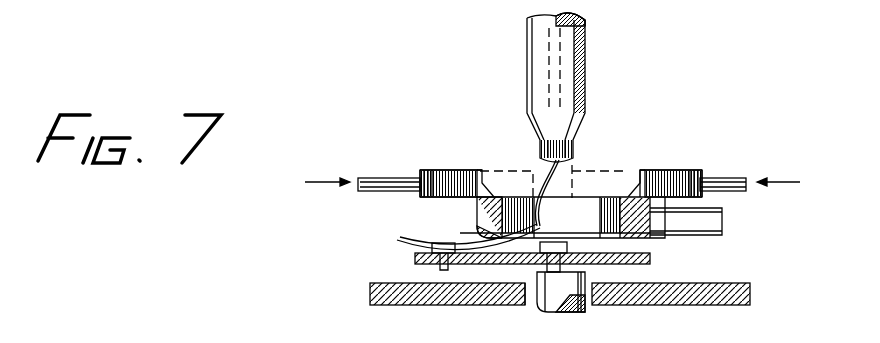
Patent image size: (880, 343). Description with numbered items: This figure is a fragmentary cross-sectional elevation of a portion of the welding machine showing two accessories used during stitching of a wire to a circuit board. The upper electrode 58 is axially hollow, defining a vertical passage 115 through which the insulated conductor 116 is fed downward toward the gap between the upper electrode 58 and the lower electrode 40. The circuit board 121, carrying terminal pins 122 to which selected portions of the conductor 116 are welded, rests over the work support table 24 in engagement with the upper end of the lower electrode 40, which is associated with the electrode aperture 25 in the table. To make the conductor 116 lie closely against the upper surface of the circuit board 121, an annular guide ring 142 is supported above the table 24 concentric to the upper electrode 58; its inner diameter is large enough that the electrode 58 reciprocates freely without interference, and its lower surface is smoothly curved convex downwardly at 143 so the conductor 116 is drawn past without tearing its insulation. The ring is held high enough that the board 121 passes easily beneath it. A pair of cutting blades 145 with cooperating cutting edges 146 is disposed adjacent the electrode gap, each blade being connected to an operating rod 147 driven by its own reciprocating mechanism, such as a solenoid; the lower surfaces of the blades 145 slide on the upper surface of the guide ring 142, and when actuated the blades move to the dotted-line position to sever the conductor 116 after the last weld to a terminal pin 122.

The vertical passage 115 is at (587, 26).
The upper electrode 58 is at (586, 26).
The cutting blades 145 is at (446, 170).
The cooperating cutting edges 146 is at (497, 190).
The operating rod 147 is at (372, 180).
The annular guide ring 142 is at (648, 188).
The insulated conductor 116 is at (430, 215).
The terminal pins 122 is at (432, 262).
The convex lower surface of guide ring 143 is at (655, 240).
The circuit board 121 is at (650, 258).
The work support table 24 is at (750, 296).
The electrode aperture 25 is at (525, 305).
The lower electrode 40 is at (565, 314).